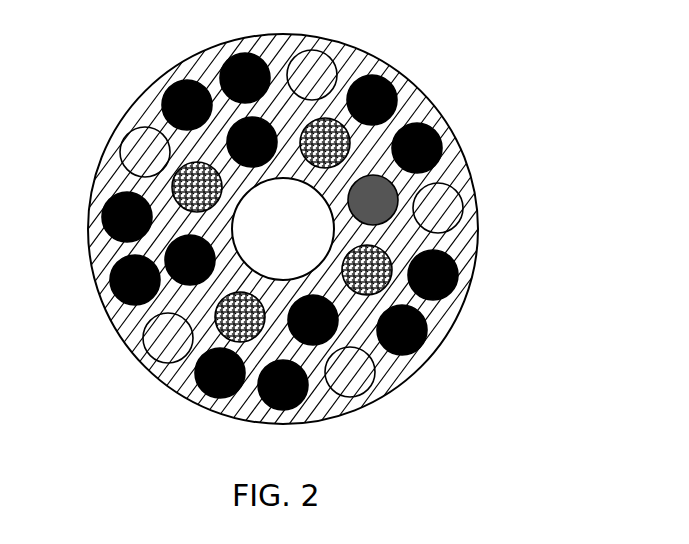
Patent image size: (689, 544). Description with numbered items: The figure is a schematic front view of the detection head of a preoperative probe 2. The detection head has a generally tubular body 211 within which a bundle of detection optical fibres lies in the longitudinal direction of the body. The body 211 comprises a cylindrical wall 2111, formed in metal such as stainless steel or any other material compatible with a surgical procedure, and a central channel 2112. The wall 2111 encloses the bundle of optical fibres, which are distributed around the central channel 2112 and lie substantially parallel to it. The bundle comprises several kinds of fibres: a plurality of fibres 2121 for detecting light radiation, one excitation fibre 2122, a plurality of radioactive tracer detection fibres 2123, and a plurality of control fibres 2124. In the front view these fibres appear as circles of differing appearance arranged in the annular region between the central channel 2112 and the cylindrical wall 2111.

The preoperative probe 2 is at (130, 89).
The body 211 is at (448, 176).
The cylindrical wall 2111 is at (435, 315).
The central channel 2112 is at (302, 215).
The fibres for detecting light radiation 2121 is at (240, 317).
The excitation fibre 2122 is at (372, 205).
The radioactive tracer detection fibres 2123 is at (283, 385).
The control fibres 2124 is at (353, 372).